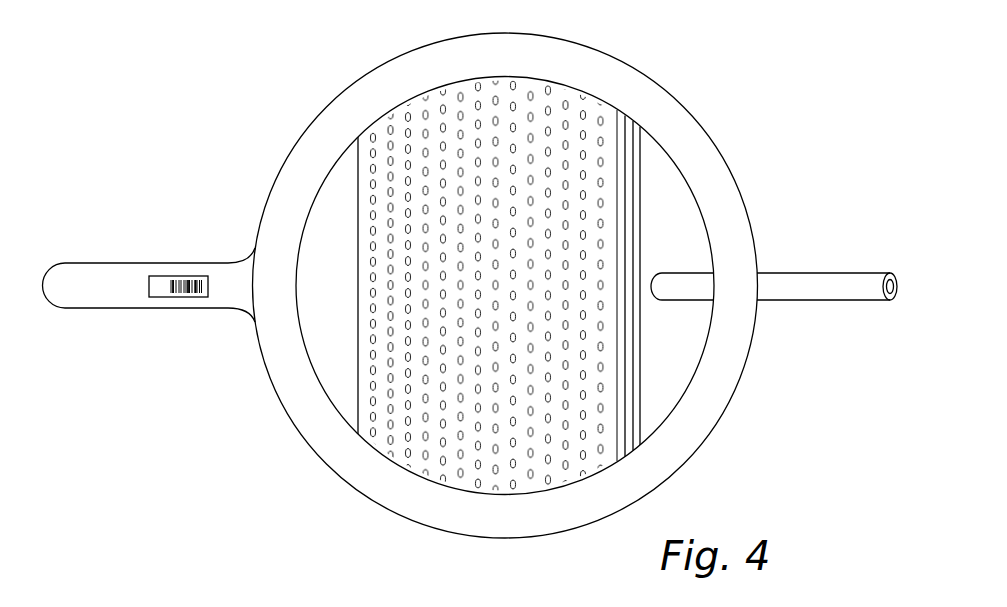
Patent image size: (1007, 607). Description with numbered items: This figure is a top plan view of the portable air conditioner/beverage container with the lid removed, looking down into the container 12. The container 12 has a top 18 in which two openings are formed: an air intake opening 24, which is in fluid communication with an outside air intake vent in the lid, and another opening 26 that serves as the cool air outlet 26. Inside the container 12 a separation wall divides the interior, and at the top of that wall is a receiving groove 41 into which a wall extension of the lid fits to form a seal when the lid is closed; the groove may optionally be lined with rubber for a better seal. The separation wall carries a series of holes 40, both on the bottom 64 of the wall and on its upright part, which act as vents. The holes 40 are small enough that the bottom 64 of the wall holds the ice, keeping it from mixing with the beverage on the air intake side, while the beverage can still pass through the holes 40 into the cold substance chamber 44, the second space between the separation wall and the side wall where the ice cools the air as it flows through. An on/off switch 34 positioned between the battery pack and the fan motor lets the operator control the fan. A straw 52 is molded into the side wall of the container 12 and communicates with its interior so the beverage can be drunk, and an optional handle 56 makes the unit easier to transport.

The container 12 is at (342, 93).
The container top 18 is at (639, 98).
The air intake opening 24 is at (672, 193).
The cool air outlet 26 is at (354, 167).
The on/off switch 34 is at (187, 278).
The holes 40 is at (374, 298).
The receiving groove 41 is at (632, 333).
The cold substance chamber 44 is at (354, 404).
The straw 52 is at (842, 272).
The handle 56 is at (75, 262).
The bottom of the separation wall 64 is at (357, 232).